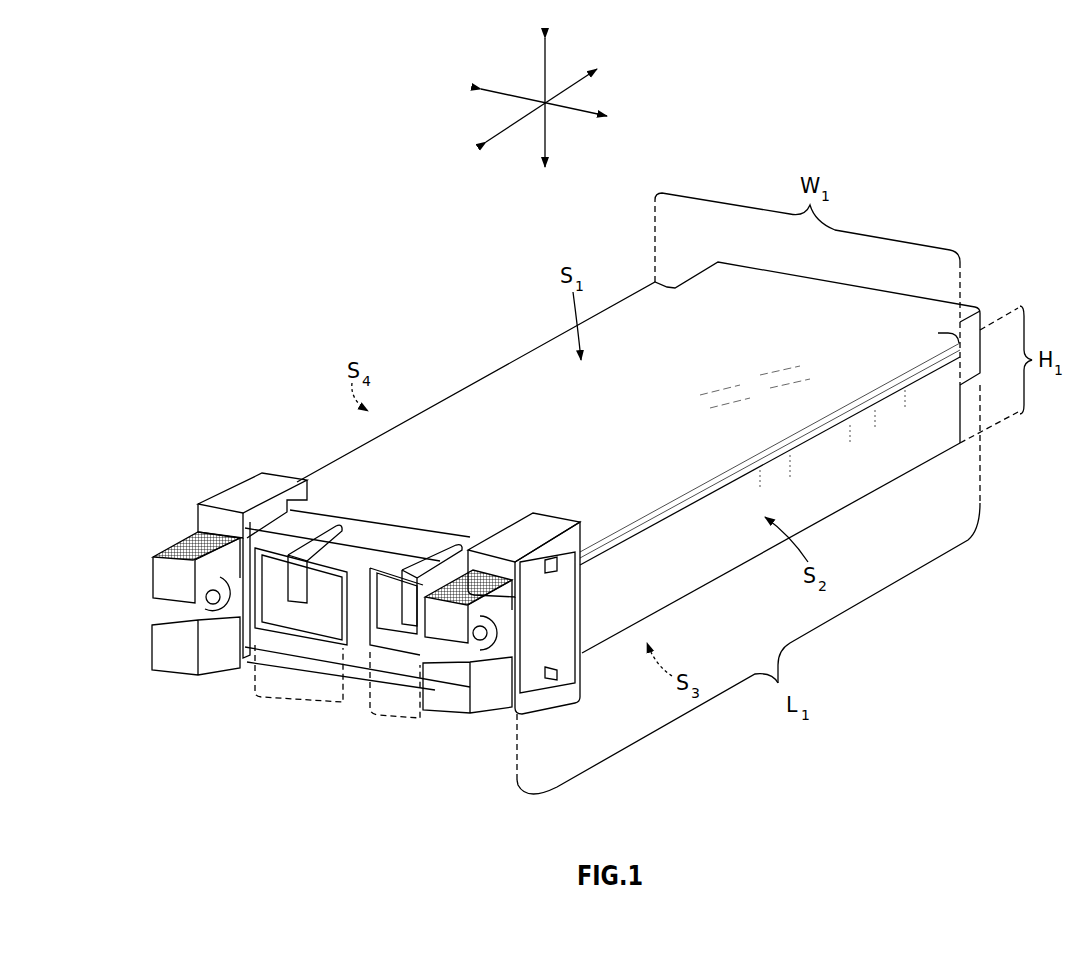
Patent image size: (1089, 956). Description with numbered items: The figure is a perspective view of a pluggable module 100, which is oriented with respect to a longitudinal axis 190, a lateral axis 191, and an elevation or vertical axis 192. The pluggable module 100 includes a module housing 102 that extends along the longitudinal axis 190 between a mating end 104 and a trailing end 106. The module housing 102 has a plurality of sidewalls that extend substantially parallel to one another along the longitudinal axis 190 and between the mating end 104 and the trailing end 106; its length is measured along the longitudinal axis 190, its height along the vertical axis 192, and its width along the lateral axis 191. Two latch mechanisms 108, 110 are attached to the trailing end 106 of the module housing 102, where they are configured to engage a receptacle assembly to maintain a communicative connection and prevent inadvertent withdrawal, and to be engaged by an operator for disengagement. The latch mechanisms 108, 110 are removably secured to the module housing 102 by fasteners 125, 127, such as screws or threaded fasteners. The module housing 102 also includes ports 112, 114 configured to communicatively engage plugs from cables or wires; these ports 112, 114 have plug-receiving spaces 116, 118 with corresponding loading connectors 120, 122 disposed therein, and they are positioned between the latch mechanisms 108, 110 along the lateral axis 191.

The pluggable module 100 is at (370, 178).
The module housing 102 is at (503, 397).
The mating end 104 is at (862, 262).
The trailing end 106 is at (293, 591).
The latch mechanism 108 is at (228, 463).
The latch mechanism 110 is at (542, 497).
The port 112 is at (267, 605).
The port 114 is at (407, 637).
The plug-receiving space 116 is at (300, 702).
The plug-receiving space 118 is at (420, 718).
The loading connector 120 is at (317, 557).
The loading connector 122 is at (426, 578).
The fastener 125 is at (212, 602).
The fastener 127 is at (494, 652).
The longitudinal axis 190 is at (582, 80).
The lateral axis 191 is at (558, 110).
The vertical axis 192 is at (545, 72).